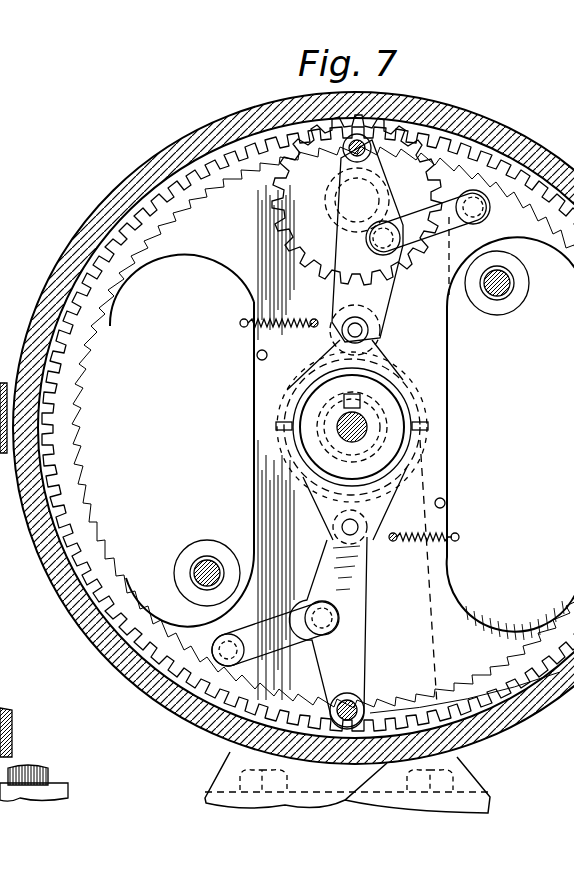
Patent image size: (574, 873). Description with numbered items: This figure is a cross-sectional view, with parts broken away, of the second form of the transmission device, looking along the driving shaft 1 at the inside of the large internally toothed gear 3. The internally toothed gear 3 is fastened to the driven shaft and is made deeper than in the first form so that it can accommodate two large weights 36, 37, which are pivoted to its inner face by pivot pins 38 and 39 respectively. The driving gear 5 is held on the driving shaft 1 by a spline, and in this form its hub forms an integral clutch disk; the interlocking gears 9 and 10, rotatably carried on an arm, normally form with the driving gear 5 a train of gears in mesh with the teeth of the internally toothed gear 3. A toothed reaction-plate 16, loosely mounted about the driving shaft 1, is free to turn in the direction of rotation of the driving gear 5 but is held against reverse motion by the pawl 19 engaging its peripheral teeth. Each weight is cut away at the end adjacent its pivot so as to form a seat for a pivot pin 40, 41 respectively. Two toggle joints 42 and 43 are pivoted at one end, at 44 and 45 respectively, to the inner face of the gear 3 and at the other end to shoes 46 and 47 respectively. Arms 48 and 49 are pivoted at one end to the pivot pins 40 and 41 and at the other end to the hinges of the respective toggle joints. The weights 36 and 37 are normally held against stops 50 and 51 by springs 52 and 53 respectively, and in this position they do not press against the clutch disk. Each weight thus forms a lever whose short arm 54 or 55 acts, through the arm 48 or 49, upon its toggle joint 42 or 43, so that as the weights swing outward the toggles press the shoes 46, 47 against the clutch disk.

The driving shaft 1 is at (333, 413).
The internally toothed gear 3 is at (80, 270).
The driving gear 5 is at (278, 440).
The interlocking gear 9 is at (393, 307).
The interlocking gear 10 is at (290, 205).
The reaction-plate 16 is at (210, 212).
The pawl 19 is at (430, 703).
The weight 36 is at (182, 441).
The weight 37 is at (497, 461).
The pivot pin 38 is at (200, 568).
The pivot pin 39 is at (507, 287).
The pivot pin 40 is at (212, 652).
The pivot pin 41 is at (477, 203).
The toggle joint 42 is at (340, 637).
The toggle joint 43 is at (360, 253).
The pivot 44 is at (355, 705).
The pivot 45 is at (345, 143).
The shoe 46 is at (340, 508).
The shoe 47 is at (387, 352).
The arm 48 is at (275, 634).
The arm 49 is at (428, 222).
The stop 50 is at (257, 355).
The stop 51 is at (444, 505).
The spring 52 is at (275, 320).
The spring 53 is at (417, 540).
The short arm 54 is at (222, 650).
The short arm 55 is at (482, 218).